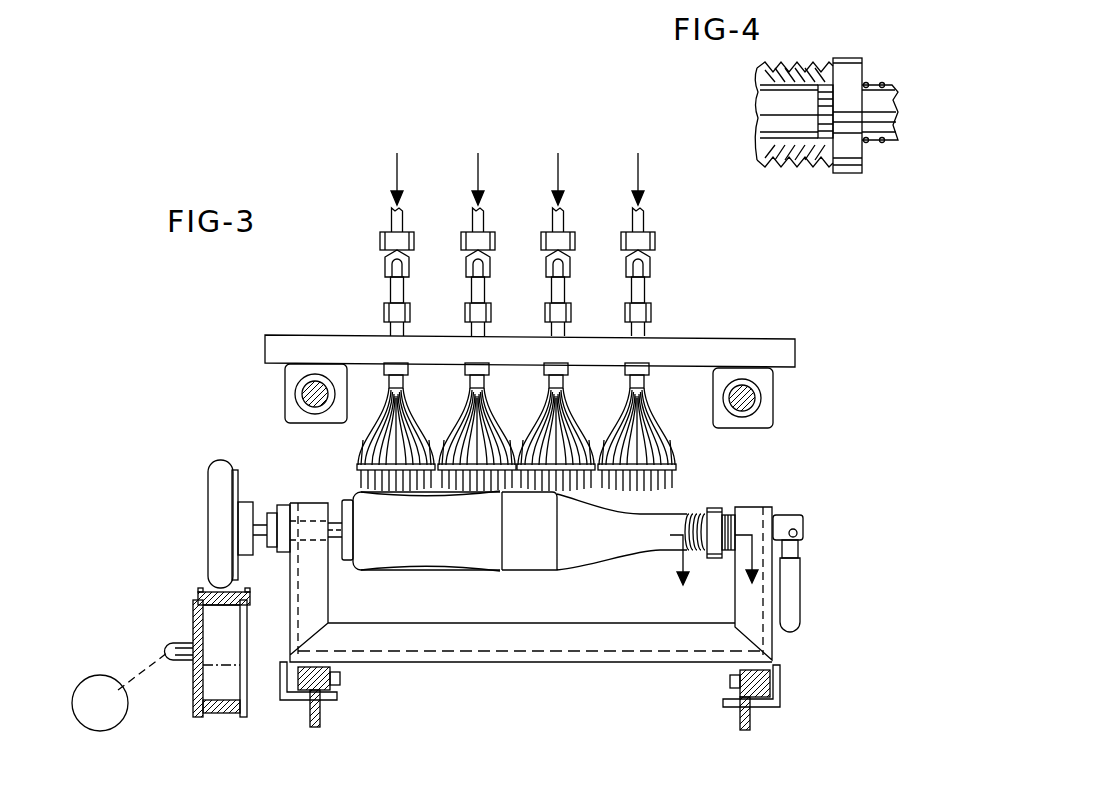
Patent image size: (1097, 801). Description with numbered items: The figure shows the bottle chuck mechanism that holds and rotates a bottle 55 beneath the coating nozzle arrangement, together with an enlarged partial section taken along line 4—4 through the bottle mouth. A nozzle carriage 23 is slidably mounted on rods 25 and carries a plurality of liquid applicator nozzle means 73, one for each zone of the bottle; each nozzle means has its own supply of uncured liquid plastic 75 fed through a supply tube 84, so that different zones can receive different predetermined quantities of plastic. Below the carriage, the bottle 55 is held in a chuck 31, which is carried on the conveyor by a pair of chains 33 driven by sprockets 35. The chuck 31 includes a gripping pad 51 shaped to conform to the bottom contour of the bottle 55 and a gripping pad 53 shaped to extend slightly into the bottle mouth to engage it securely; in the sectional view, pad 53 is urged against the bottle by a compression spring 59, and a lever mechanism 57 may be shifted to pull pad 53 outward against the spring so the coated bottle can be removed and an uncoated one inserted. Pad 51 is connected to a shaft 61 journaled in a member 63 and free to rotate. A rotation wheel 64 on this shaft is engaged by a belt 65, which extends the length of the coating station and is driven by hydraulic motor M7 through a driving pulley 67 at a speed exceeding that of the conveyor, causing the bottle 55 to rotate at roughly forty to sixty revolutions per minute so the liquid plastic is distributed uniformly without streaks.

In FIG. 3, the nozzle carriage 23 is at (768, 348).
In FIG. 3, the rods 25 is at (307, 393).
In FIG. 3, the bottle chuck 31 is at (770, 497).
In FIG. 3, the chains 33 is at (333, 672).
In FIG. 3, the sprockets 35 is at (320, 717).
In FIG. 3, the section line 4- 4 is at (710, 572).
In FIG. 3, the bottle gripping pad 51 is at (348, 503).
In FIG. 3, the bottle gripping pad 53 is at (712, 507).
In FIG. 4, the bottle gripping pad 53 is at (847, 160).
In FIG. 3, the bottle 55 is at (574, 550).
In FIG. 4, the bottle 55 is at (770, 70).
In FIG. 3, the lever mechanism 57 is at (797, 550).
In FIG. 3, the compression spring 59 is at (727, 515).
In FIG. 4, the compression spring 59 is at (877, 83).
In FIG. 3, the shaft 61 is at (260, 523).
In FIG. 3, the member 63 is at (317, 580).
In FIG. 3, the rotation wheel 64 is at (222, 528).
In FIG. 3, the belt 65 is at (207, 590).
In FIG. 3, the driving pulley 67 is at (193, 613).
In FIG. 3, the liquid applicator nozzle means 73 is at (411, 409).
In FIG. 3, the supply of uncured liquid plastic 75 is at (398, 292).
In FIG. 3, the supply tube 84 is at (402, 218).
In FIG. 3, the hydraulic motor M7 is at (119, 692).